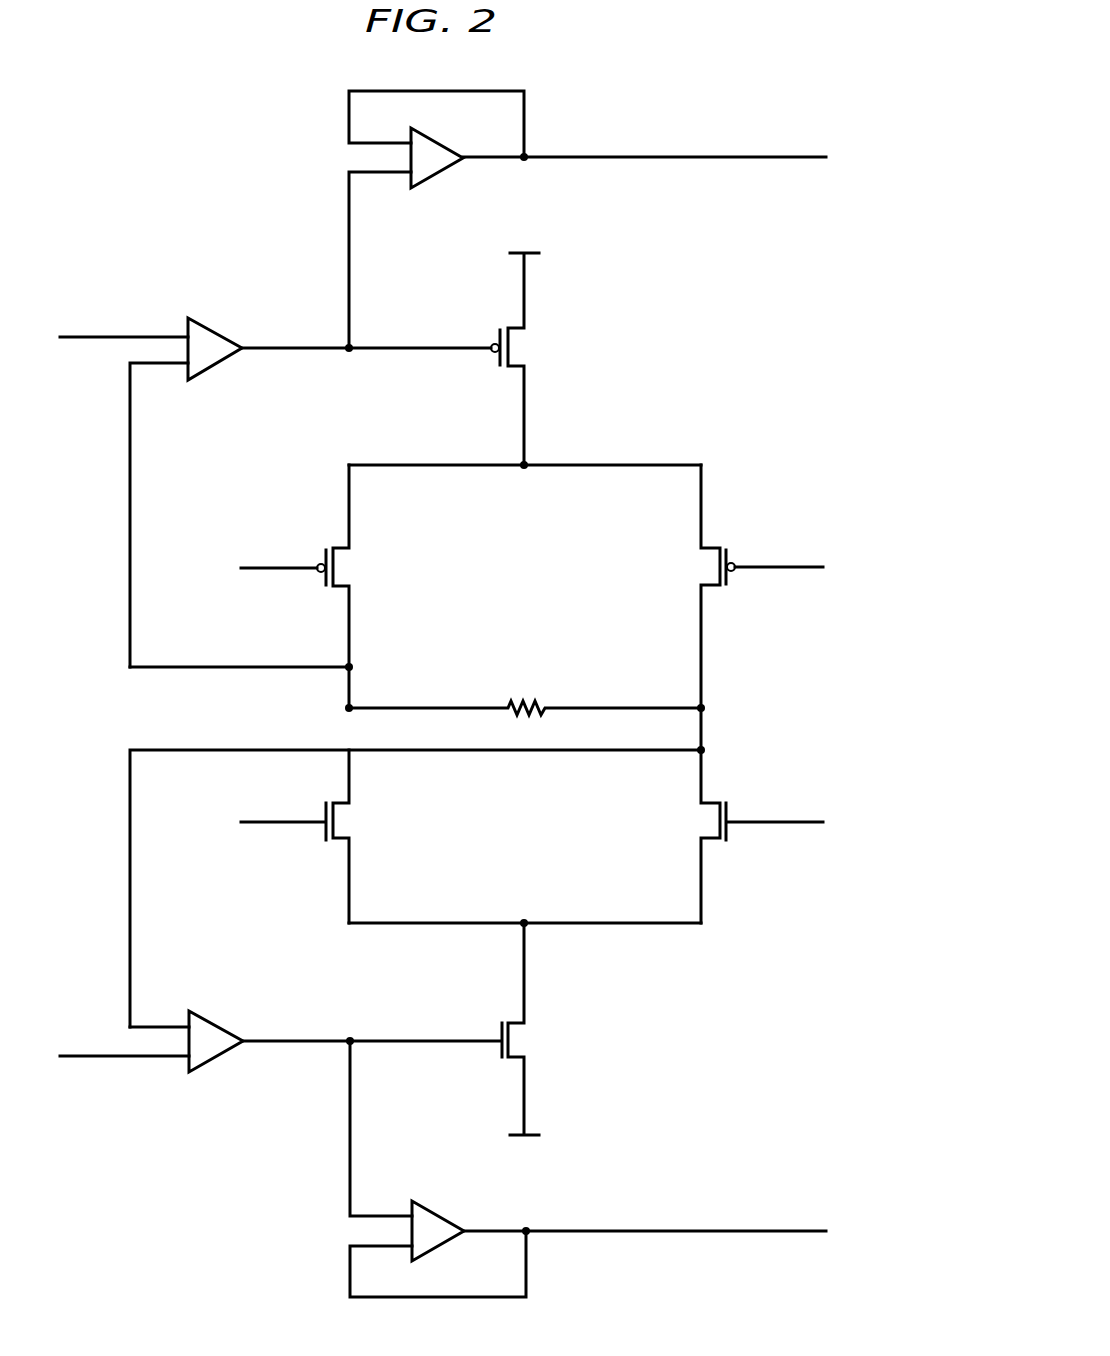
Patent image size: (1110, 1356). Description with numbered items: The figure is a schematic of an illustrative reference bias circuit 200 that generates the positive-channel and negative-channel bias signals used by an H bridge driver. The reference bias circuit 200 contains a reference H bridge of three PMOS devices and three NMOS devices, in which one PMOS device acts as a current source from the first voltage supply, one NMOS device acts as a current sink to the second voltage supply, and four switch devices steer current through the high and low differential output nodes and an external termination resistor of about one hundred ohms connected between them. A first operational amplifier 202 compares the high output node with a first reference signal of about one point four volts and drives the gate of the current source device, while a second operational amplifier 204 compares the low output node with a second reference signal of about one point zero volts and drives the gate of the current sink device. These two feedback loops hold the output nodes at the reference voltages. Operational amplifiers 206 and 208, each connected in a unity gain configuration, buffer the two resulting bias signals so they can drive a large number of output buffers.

The reference bias circuit 200 is at (196, 116).
The first operational amplifier 202 is at (208, 322).
The second operational amplifier 204 is at (211, 1017).
The operational amplifier 206 is at (436, 180).
The operational amplifier 208 is at (437, 1207).